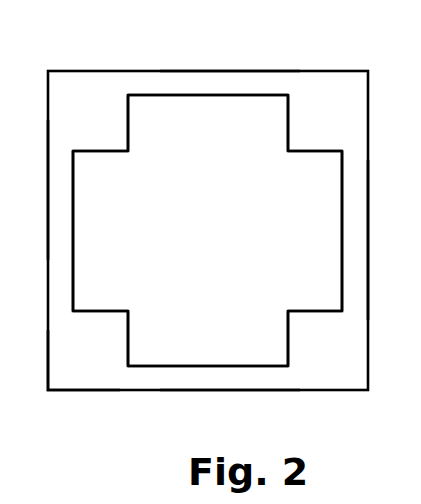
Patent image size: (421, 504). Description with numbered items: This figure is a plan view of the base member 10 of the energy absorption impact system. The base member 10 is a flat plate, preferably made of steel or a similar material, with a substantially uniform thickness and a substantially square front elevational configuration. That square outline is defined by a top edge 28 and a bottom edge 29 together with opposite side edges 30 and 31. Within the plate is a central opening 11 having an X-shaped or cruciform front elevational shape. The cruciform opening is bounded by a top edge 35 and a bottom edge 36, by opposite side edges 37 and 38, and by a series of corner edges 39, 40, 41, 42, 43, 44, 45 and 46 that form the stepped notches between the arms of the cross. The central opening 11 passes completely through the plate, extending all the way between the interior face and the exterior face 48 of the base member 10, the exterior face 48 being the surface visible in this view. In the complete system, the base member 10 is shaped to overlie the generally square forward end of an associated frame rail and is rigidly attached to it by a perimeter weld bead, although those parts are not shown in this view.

The base member 10 is at (44, 67).
The central opening 11 is at (128, 152).
The top edge 28 is at (232, 70).
The bottom edge 29 is at (225, 391).
The side edge 30 is at (47, 200).
The side edge 31 is at (369, 252).
The top edge of central opening 35 is at (216, 96).
The bottom edge of central opening 36 is at (223, 363).
The side edge of central opening 37 is at (75, 234).
The side edge of central opening 38 is at (341, 229).
The corner edge 39 is at (129, 118).
The corner edge 40 is at (287, 130).
The corner edge 41 is at (321, 152).
The corner edge 42 is at (321, 310).
The corner edge 43 is at (287, 326).
The corner edge 44 is at (129, 342).
The corner edge 45 is at (107, 311).
The corner edge 46 is at (96, 152).
The exterior face 48 is at (63, 366).